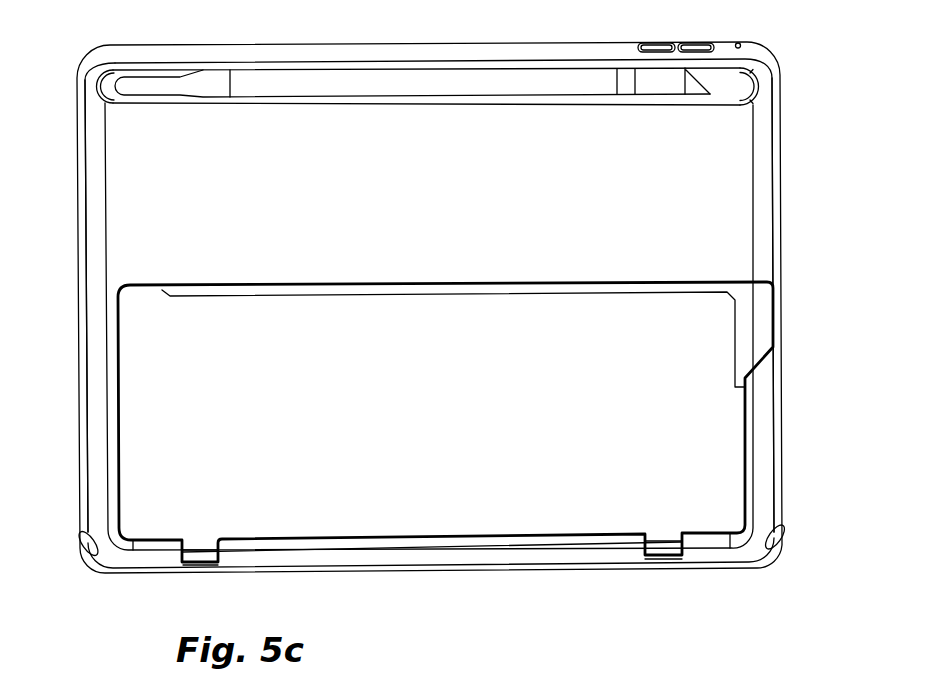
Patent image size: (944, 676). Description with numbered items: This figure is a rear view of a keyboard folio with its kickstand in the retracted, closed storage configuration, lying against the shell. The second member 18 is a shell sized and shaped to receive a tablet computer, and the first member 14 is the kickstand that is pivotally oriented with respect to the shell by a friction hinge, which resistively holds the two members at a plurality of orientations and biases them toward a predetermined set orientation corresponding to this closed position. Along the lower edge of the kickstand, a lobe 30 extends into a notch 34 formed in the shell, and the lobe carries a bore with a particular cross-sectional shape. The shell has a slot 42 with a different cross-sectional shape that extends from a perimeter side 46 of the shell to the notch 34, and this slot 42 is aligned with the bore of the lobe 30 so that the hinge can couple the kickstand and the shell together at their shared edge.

The second member 18 is at (127, 178).
The first member 14 is at (137, 327).
The perimeter side 46 is at (80, 517).
The slot 42 is at (85, 542).
The lobe 30 is at (197, 556).
The notch 34 is at (208, 573).